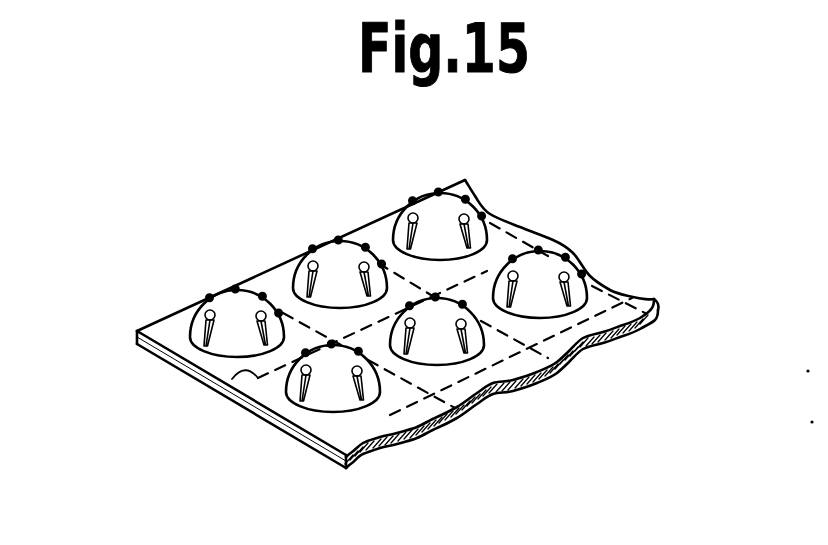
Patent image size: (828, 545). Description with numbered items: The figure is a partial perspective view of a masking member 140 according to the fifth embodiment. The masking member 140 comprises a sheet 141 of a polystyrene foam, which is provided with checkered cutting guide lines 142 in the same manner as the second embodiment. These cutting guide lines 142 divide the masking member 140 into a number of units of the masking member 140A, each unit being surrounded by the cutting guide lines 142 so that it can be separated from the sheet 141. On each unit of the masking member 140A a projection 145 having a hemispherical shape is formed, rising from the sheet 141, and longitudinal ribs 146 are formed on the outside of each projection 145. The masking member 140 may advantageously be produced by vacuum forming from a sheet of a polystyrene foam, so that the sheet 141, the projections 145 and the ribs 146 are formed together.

The masking member 140 is at (138, 320).
The unit of the masking member 140A is at (377, 236).
The sheet 141 is at (402, 405).
The cutting guide lines 142 is at (491, 264).
The projection 145 is at (340, 248).
The longitudinal ribs 146 is at (418, 196).